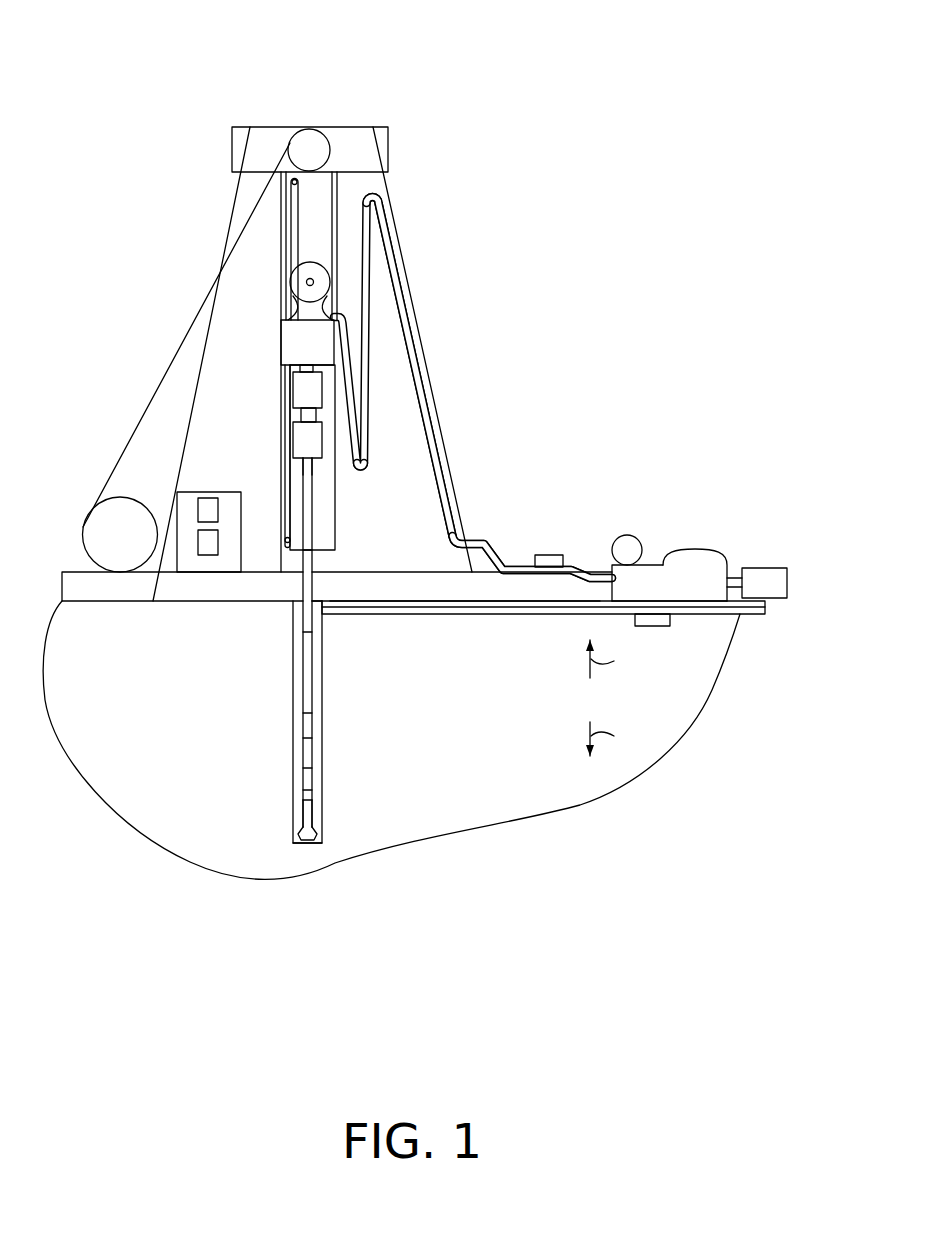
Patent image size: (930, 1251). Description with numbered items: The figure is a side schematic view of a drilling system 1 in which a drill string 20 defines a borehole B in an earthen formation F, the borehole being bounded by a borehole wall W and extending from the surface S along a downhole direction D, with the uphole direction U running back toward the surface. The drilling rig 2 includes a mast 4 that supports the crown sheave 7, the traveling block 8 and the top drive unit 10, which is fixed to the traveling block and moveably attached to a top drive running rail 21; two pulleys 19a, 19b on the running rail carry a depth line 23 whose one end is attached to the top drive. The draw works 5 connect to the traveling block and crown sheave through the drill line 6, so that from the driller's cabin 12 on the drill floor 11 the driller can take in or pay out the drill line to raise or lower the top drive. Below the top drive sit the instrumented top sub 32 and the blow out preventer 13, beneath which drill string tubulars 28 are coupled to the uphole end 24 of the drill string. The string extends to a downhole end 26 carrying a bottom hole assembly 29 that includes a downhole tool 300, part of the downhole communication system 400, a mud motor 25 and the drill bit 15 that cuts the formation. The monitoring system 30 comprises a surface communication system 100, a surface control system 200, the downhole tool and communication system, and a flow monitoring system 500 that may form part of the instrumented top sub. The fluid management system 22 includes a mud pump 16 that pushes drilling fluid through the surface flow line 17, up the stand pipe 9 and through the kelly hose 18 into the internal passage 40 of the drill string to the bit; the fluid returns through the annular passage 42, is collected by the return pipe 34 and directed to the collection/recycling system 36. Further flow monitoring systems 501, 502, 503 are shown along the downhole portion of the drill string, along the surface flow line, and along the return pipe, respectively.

The drilling system 1 is at (76, 54).
The drilling rig 2 is at (308, 329).
The mast 4 is at (238, 177).
The draw works 5 is at (97, 535).
The drill line 6 is at (120, 448).
The crown sheave 7 is at (310, 140).
The traveling block 8 is at (320, 283).
The stand pipe 9 is at (402, 312).
The top drive unit 10 is at (307, 342).
The drill floor 11 is at (438, 572).
The driller's cabin 12 is at (187, 562).
The blow out preventer 13 is at (318, 452).
The drill bit 15 is at (313, 833).
The mud pump 16 is at (669, 583).
The surface flow line 17 is at (495, 550).
The kelly hose 18 is at (370, 377).
The pulley 19a is at (294, 184).
The pulley 19b is at (287, 550).
The drill string 20 is at (315, 520).
The top drive running rail 21 is at (313, 192).
The fluid management system 22 is at (716, 543).
The depth line 23 is at (293, 477).
The uphole end 24 is at (297, 464).
The mud motor 25 is at (310, 782).
The downhole end 26 is at (281, 839).
The drill string tubular 28 is at (318, 562).
The bottom hole assembly 29 is at (310, 810).
The monitoring system 30 is at (204, 408).
The instrumented top sub 32 is at (303, 392).
The return pipe 34 is at (752, 615).
The collection/recycling system 36 is at (764, 583).
The internal passage 40 is at (305, 602).
The annular passage 42 is at (318, 645).
The surface communication system 100 is at (208, 510).
The surface control system 200 is at (213, 548).
The downhole tool 300 is at (305, 757).
The downhole communication system 400 is at (310, 727).
The flow monitoring system 500 is at (284, 366).
The flow monitoring system 501 is at (310, 797).
The flow monitoring system 502 is at (563, 558).
The flow monitoring system 503 is at (666, 628).
The surface S is at (412, 593).
The borehole wall W is at (315, 684).
The formation F is at (391, 740).
The borehole B is at (323, 768).
The uphole direction U is at (613, 659).
The downhole direction D is at (613, 739).